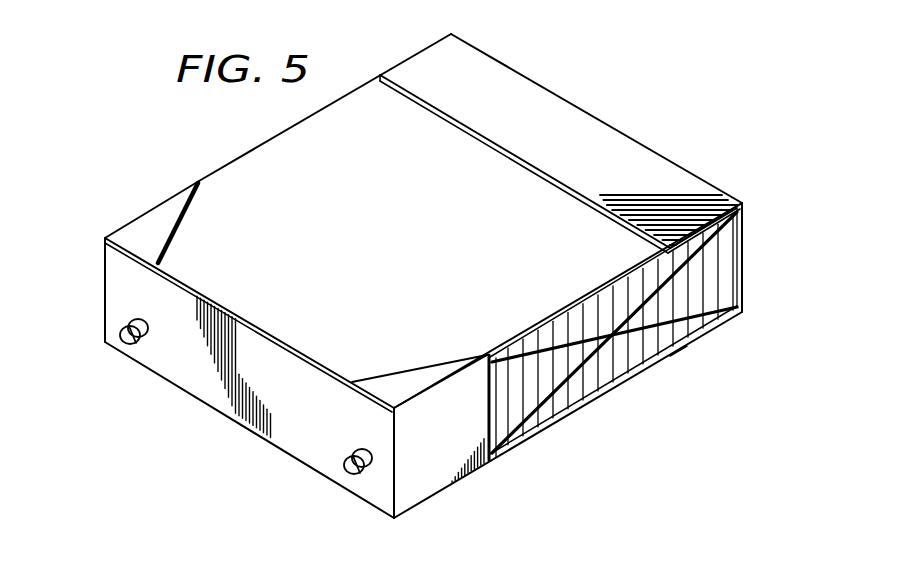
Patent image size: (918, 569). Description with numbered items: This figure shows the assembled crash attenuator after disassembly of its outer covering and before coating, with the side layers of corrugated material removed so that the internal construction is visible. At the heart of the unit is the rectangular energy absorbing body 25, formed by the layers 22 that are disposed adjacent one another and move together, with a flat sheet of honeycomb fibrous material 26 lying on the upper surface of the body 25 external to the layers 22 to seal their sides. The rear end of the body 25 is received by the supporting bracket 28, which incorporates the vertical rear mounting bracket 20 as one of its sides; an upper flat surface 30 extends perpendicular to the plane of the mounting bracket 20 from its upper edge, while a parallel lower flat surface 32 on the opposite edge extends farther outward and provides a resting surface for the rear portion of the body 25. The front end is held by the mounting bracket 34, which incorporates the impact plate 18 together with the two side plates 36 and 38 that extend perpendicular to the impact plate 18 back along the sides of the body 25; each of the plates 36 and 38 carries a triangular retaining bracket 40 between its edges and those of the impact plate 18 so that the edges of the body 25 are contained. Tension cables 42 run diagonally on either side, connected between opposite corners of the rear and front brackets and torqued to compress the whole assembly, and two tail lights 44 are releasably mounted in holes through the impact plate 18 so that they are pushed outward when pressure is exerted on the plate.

The impact plate 18 is at (213, 390).
The mounting bracket 20 is at (745, 260).
The layers 22 is at (630, 360).
The energy absorbing body 25 is at (250, 151).
The honeycomb fibrous material 26 is at (419, 227).
The supporting bracket 28 is at (552, 89).
The upper flat surface 30 is at (638, 152).
The lower flat surface 32 is at (723, 328).
The mounting bracket 34 is at (100, 282).
The plate 36 is at (417, 484).
The plate 38 is at (136, 219).
The retaining bracket 40 is at (164, 212).
The tension cables 42 is at (698, 327).
The tail lights 44 is at (133, 344).